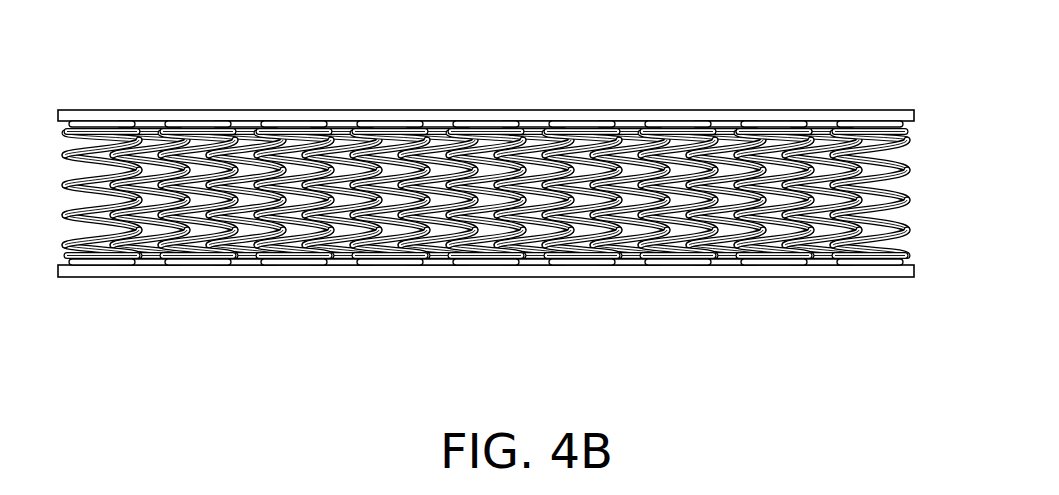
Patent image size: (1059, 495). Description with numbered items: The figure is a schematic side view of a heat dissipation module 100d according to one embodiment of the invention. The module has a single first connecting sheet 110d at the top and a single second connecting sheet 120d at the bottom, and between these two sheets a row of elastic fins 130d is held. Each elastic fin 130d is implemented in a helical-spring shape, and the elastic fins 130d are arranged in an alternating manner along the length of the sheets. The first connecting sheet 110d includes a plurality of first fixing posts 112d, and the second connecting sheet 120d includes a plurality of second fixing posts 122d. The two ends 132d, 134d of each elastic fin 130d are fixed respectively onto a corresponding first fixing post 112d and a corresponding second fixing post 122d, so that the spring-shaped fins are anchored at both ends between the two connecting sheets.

The heat dissipation module 100d is at (947, 397).
The first connecting sheet 110d is at (445, 115).
The first fixing posts 112d is at (558, 127).
The second connecting sheet 120d is at (507, 273).
The second fixing posts 122d is at (607, 263).
The elastic fins 130d is at (499, 203).
The end of elastic fin 132d is at (741, 118).
The end of elastic fin 134d is at (827, 267).